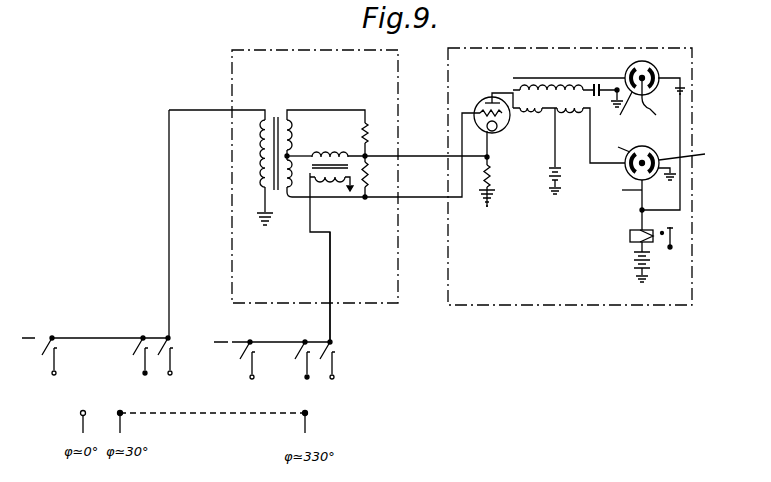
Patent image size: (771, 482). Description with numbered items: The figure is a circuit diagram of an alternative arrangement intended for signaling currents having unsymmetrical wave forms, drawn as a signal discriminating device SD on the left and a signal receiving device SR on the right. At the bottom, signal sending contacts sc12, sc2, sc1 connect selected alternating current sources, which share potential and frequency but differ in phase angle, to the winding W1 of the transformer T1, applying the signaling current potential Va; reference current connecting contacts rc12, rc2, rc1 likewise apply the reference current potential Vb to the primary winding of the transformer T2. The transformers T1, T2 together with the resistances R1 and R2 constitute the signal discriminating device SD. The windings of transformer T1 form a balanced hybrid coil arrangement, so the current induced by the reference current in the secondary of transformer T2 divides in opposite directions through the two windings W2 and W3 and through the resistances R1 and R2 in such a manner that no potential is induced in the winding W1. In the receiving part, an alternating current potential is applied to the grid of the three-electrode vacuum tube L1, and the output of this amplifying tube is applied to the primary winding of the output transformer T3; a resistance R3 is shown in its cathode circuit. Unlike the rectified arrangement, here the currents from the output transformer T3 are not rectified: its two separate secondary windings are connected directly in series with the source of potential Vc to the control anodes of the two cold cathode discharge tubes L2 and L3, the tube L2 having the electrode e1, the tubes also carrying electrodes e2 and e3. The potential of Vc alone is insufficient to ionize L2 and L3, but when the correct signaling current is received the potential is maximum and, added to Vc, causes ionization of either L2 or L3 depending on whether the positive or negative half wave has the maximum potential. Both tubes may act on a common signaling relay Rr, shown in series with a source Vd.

The signal discriminating device SD is at (315, 176).
The receiver SR is at (570, 176).
The transformer T1 is at (273, 140).
The winding of transformer T1 W1 is at (253, 172).
The winding of transformer T1 W2 is at (302, 135).
The winding of transformer T1 W3 is at (296, 194).
The transformer T2 is at (330, 154).
The resistance R1 is at (374, 135).
The resistance R2 is at (374, 176).
The third resistor R3 is at (498, 176).
The signaling current potential Va is at (183, 224).
The reference current potential Vb is at (345, 287).
The source of potential Vc is at (567, 181).
The battery d Vd is at (625, 267).
The three-electrode vacuum tube L1 is at (495, 124).
The output transformer T3 is at (551, 85).
The cold cathode discharge tube L3 is at (629, 73).
The cold cathode discharge tube L2 is at (647, 158).
The electrode of cold cathode discharge tube e1 is at (615, 127).
The second electrode e2 is at (690, 132).
The third electrode e3 is at (636, 144).
The common signaling relay Rr is at (636, 238).
The signal sending contact sc12 is at (36, 357).
The signal sending contact sc2 is at (130, 359).
The signal sending contact sc1 is at (161, 359).
The reference current connecting contact rc12 is at (239, 362).
The reference current connecting contact rc2 is at (296, 362).
The reference current connecting contact rc1 is at (323, 362).